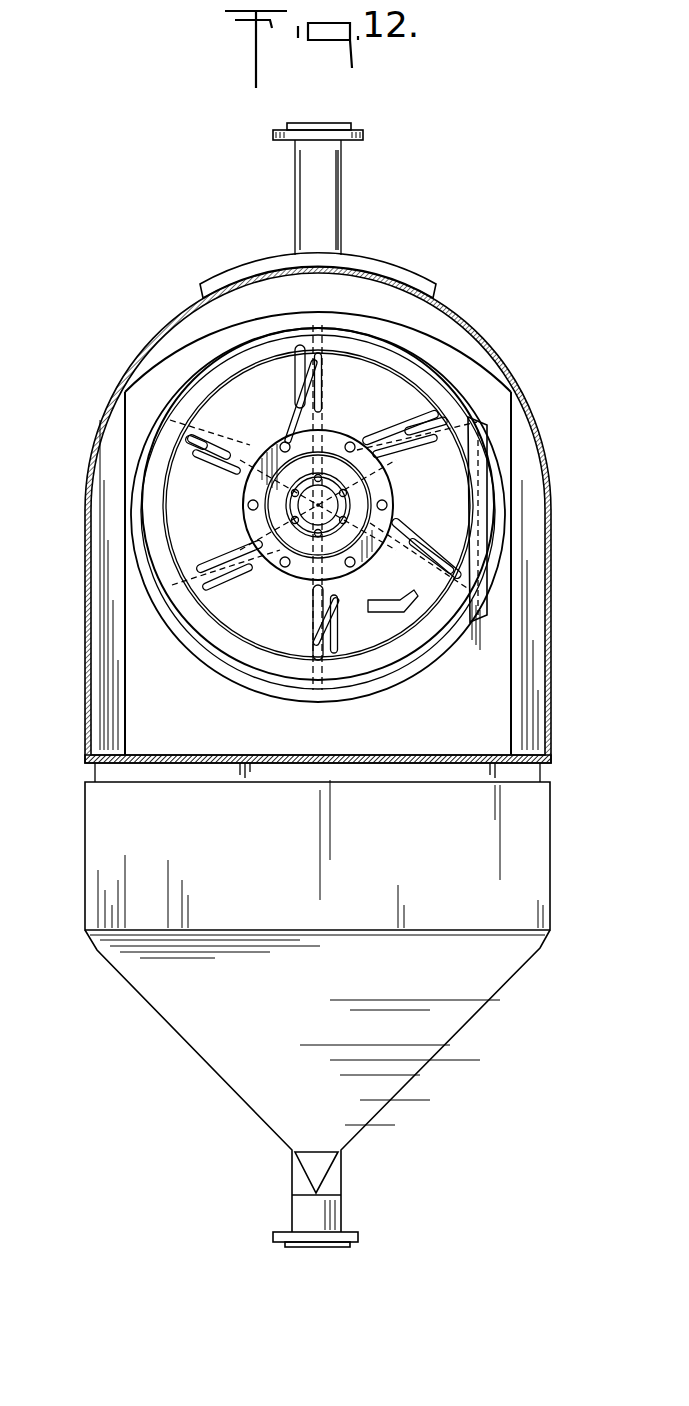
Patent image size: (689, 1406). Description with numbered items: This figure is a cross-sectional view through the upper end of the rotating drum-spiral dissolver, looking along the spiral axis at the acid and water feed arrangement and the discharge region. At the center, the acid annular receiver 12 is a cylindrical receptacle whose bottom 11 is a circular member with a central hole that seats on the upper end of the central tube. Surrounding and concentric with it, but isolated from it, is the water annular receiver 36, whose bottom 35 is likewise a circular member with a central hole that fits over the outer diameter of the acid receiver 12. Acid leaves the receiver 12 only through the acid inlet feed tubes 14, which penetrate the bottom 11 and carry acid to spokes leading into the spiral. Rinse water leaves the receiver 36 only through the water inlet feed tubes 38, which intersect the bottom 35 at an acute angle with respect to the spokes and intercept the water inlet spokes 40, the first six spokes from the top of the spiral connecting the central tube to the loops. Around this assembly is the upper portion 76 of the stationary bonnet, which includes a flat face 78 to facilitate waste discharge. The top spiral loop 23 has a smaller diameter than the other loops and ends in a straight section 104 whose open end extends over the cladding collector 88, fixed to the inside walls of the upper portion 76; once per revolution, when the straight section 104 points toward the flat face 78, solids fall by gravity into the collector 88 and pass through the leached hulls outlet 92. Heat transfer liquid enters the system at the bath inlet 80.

The bottom of the acid annular receiver 11 is at (360, 500).
The acid annular receiver 12 is at (327, 450).
The acid inlet feed tubes 14 is at (242, 548).
The top spiral loop 23 is at (440, 354).
The bottom of the water annular receiver 35 is at (298, 573).
The water annular receiver 36 is at (263, 453).
The water inlet feed tubes 38 is at (262, 572).
The water inlet spokes 40 is at (178, 424).
The upper portion of the bonnet 76 is at (86, 578).
The flat face 78 is at (330, 755).
The bath inlet 80 is at (323, 190).
The cladding collector 88 is at (522, 427).
The leached hulls outlet 92 is at (520, 855).
The straight section of the top spiral loop 104 is at (490, 622).